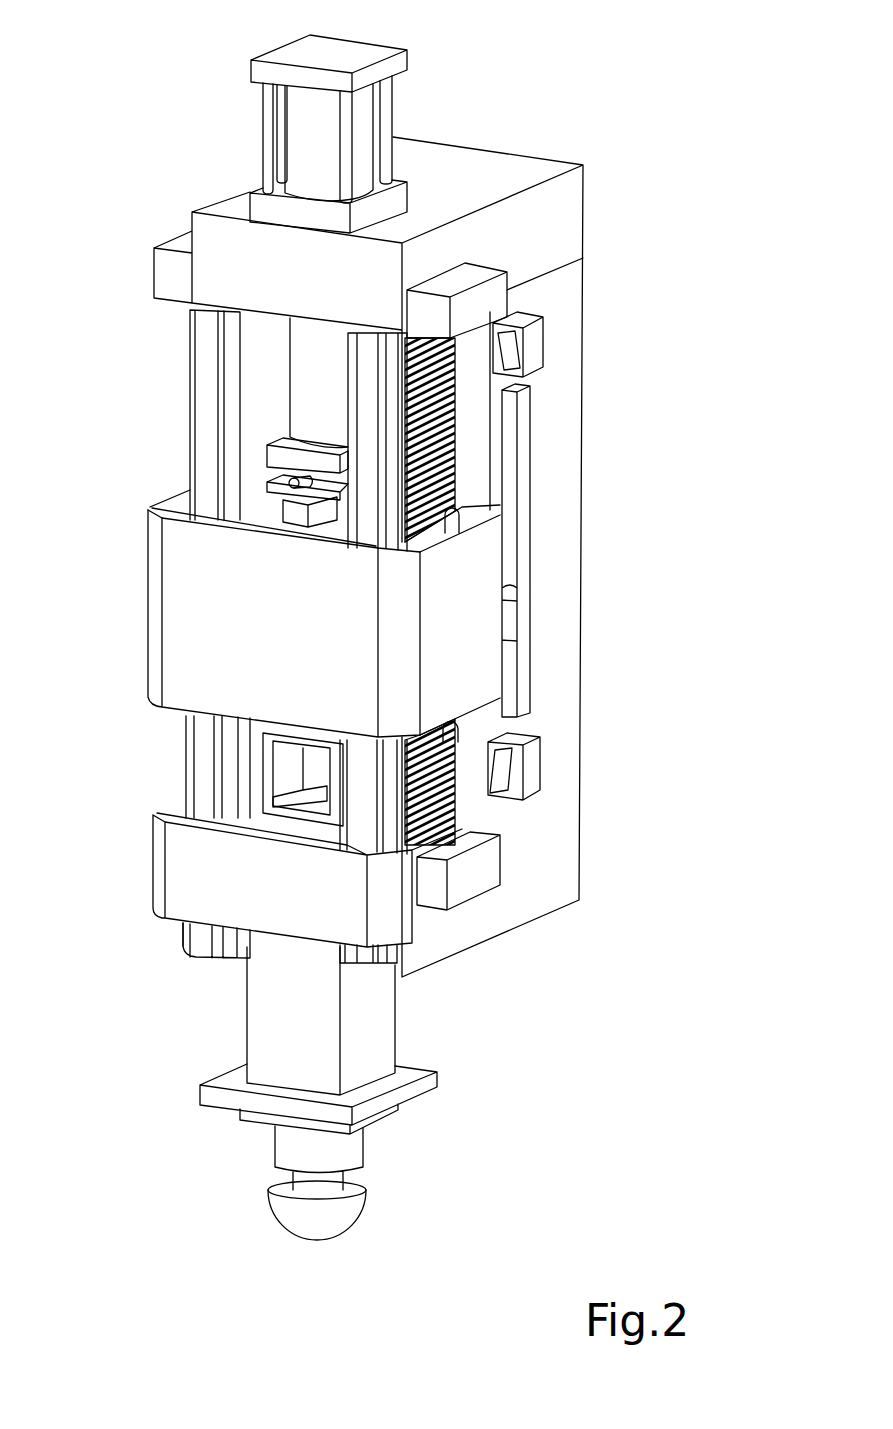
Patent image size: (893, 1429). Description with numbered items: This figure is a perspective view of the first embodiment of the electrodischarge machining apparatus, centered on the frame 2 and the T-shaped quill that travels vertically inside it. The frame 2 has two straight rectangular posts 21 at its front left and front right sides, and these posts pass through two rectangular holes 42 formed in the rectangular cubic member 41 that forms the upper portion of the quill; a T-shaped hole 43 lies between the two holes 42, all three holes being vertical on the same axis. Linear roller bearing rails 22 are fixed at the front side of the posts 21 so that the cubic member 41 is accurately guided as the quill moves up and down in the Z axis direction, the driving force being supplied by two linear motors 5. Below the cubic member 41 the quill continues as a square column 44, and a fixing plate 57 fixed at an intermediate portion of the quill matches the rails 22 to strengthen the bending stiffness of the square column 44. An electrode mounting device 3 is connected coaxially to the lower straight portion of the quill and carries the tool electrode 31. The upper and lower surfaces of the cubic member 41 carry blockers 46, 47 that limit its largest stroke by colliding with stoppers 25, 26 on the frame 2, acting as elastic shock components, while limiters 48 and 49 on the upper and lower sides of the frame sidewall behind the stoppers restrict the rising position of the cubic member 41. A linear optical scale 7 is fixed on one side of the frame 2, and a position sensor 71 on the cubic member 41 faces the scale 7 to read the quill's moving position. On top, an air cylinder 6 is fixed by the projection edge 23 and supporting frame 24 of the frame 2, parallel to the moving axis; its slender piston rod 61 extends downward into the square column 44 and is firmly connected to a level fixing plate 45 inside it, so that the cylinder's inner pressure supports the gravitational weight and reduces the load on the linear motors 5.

The frame 2 is at (566, 192).
The electrode mounting device 3 is at (210, 1097).
The linear motor 5 is at (455, 470).
The air cylinder 6 is at (313, 153).
The linear optical scale 7 is at (270, 395).
The rectangular post 21 is at (186, 443).
The linear roller bearing rail 22 is at (206, 368).
The projection edge 23 is at (316, 52).
The supporting frame 24 is at (272, 118).
The stopper 25 is at (490, 297).
The stopper 26 is at (480, 863).
The tool electrode 31 is at (298, 1218).
The rectangular cubic member 41 is at (457, 597).
The rectangular hole 42 is at (262, 510).
The T-shaped hole 43 is at (270, 519).
The square column 44 is at (270, 1025).
The level fixing plate 45 is at (275, 800).
The blocker 46 is at (450, 515).
The blocker 47 is at (457, 727).
The limiter 48 is at (533, 343).
The limiter 49 is at (533, 765).
The fixing plate 57 is at (188, 843).
The piston rod 61 is at (245, 540).
The position sensor 71 is at (258, 568).